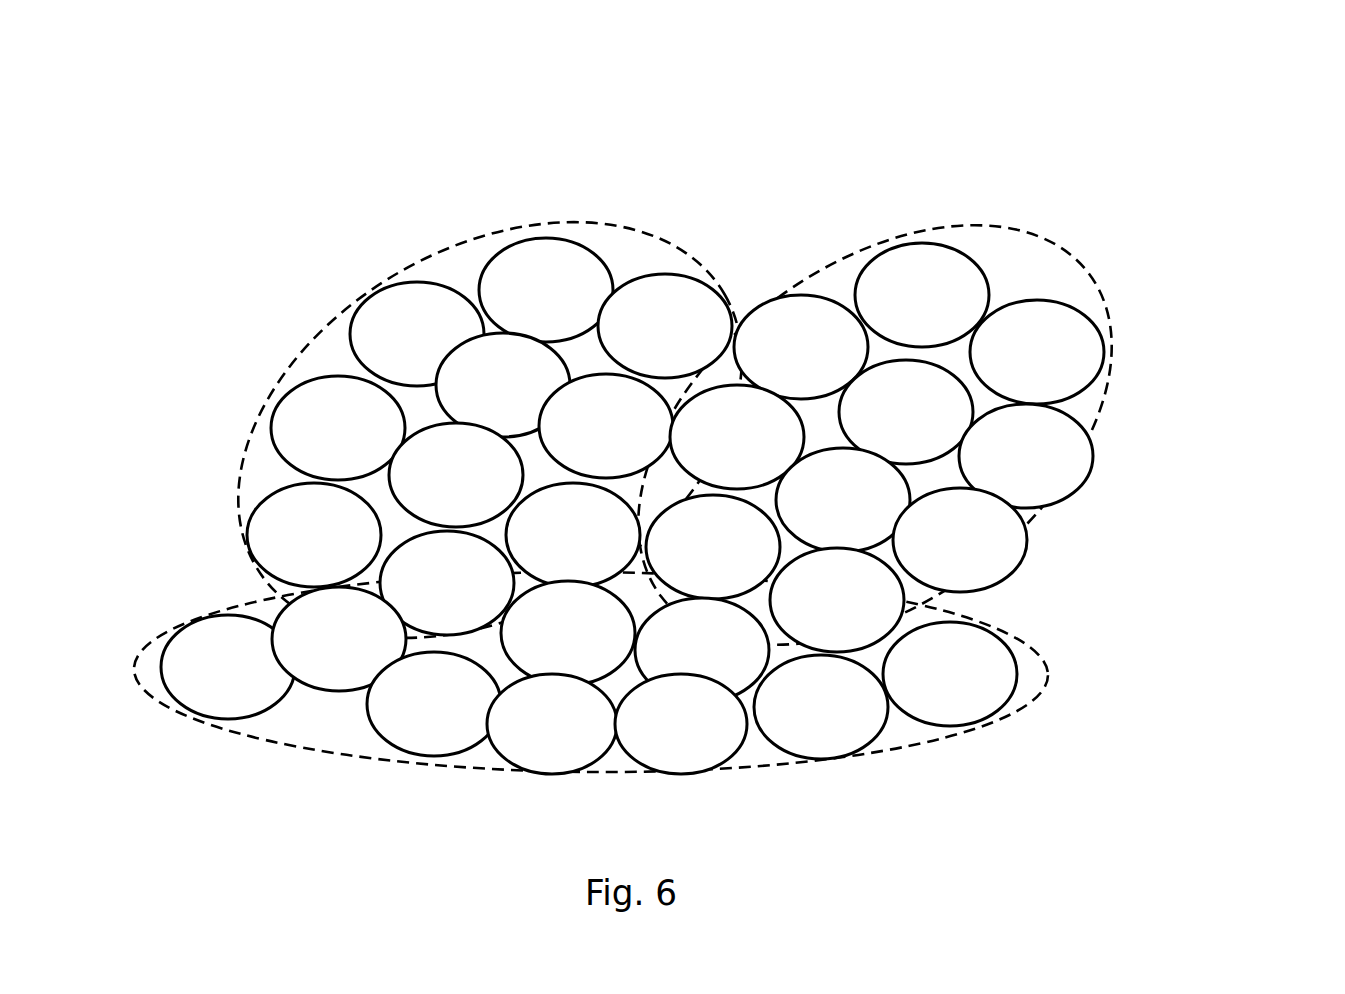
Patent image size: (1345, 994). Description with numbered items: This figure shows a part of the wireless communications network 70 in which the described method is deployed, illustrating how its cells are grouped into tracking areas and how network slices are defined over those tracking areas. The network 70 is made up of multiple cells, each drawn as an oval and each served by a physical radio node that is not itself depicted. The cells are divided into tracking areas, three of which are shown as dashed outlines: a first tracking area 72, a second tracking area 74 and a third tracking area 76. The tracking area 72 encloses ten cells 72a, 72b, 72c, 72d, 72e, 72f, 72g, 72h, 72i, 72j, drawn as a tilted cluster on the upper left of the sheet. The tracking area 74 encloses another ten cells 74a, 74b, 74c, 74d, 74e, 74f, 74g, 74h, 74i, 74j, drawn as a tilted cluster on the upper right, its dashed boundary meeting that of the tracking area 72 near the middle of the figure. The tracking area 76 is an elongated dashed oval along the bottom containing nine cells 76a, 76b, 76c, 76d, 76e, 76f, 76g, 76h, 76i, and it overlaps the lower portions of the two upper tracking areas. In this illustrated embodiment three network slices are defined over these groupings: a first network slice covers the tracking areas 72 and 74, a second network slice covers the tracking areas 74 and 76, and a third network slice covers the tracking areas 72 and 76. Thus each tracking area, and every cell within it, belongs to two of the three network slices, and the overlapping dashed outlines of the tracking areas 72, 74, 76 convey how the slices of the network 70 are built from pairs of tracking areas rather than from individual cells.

The network 70 is at (1266, 122).
The tracking area 72 is at (597, 222).
The tracking area 74 is at (1018, 240).
The tracking area 76 is at (1038, 643).
The cell 72a is at (546, 290).
The cell 72b is at (665, 326).
The cell 72c is at (417, 334).
The cell 72d is at (503, 385).
The cell 72e is at (338, 428).
The cell 72f is at (606, 426).
The cell 72g is at (456, 475).
The cell 72h is at (314, 535).
The cell 72i is at (573, 535).
The cell 72j is at (447, 583).
The cell 74a is at (922, 295).
The cell 74b is at (801, 347).
The cell 74c is at (1037, 352).
The cell 74d is at (906, 412).
The cell 74e is at (737, 437).
The cell 74f is at (1026, 456).
The cell 74g is at (843, 500).
The cell 74h is at (960, 540).
The cell 74i is at (713, 547).
The cell 74j is at (837, 600).
The cell 76a is at (228, 667).
The cell 76b is at (339, 639).
The cell 76c is at (434, 704).
The cell 76d is at (552, 724).
The cell 76e is at (568, 633).
The cell 76f is at (702, 650).
The cell 76g is at (681, 724).
The cell 76h is at (821, 707).
The cell 76i is at (950, 674).